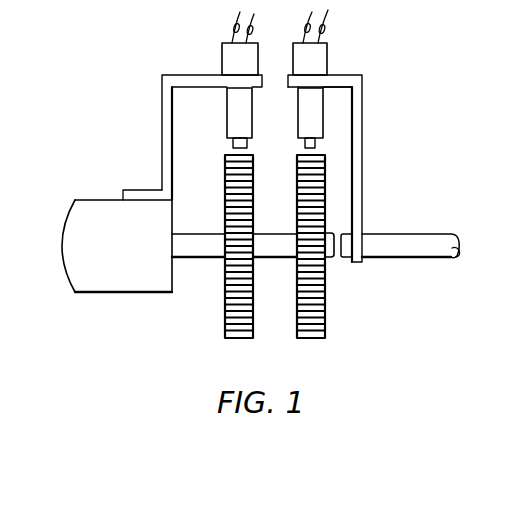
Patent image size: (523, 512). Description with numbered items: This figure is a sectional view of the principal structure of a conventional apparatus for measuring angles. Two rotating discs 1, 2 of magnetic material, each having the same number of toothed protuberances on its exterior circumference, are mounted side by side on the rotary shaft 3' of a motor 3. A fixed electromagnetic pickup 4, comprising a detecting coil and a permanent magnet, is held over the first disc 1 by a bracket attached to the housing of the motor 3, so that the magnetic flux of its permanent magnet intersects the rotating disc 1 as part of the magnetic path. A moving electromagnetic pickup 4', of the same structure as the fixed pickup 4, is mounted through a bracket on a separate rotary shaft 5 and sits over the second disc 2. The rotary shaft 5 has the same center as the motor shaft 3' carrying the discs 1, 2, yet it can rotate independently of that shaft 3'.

The rotating disc 1 is at (235, 318).
The rotating disc 2 is at (322, 318).
The motor 3 is at (117, 268).
The rotary shaft 3' is at (253, 271).
The electromagnetic pickup 4 is at (222, 80).
The moving electromagnetic pickup 4' is at (332, 79).
The rotary shaft 5 is at (381, 241).